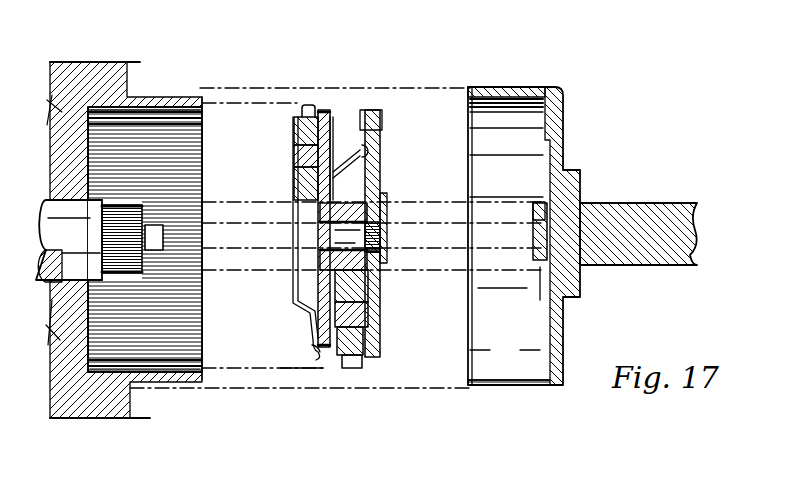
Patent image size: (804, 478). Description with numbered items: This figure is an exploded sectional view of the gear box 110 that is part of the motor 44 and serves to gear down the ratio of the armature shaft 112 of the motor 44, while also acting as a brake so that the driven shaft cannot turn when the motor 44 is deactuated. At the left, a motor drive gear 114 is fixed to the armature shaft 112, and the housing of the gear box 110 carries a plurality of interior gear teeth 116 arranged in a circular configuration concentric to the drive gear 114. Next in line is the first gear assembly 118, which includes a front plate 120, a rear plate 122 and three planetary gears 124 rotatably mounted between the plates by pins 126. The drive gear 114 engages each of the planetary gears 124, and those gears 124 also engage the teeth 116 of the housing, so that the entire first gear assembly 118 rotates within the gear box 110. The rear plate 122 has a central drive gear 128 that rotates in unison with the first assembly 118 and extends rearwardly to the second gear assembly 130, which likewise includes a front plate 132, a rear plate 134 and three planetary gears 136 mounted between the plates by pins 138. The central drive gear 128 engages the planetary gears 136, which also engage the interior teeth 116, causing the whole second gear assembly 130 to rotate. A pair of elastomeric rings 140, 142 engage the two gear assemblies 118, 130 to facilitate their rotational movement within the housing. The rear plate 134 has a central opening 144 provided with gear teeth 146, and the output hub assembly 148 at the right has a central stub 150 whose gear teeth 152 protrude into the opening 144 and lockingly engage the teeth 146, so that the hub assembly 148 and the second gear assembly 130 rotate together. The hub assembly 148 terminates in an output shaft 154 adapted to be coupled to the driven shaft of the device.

The motor 44 is at (95, 61).
The gear box 110 is at (168, 96).
The gear teeth 116 is at (190, 108).
The armature shaft 112 is at (128, 273).
The motor drive gear 114 is at (148, 252).
The first gear assembly 118 is at (305, 92).
The front plate 120 is at (296, 184).
The rear plate 122 is at (323, 112).
The planetary gears 124 is at (302, 133).
The pins 126 is at (302, 158).
The central drive gear 128 is at (368, 222).
The second gear assembly 130 is at (368, 376).
The front plate 132 is at (333, 356).
The rear plate 134 is at (368, 341).
The planetary gears 136 is at (356, 362).
The pins 138 is at (368, 311).
The elastomeric ring 140 is at (322, 349).
The elastomeric ring 142 is at (376, 118).
The central opening 144 is at (380, 238).
The gear teeth 146 is at (375, 255).
The output hub assembly 148 is at (531, 86).
The central stub 150 is at (473, 210).
The gear teeth 152 is at (540, 267).
The output shaft 154 is at (648, 203).